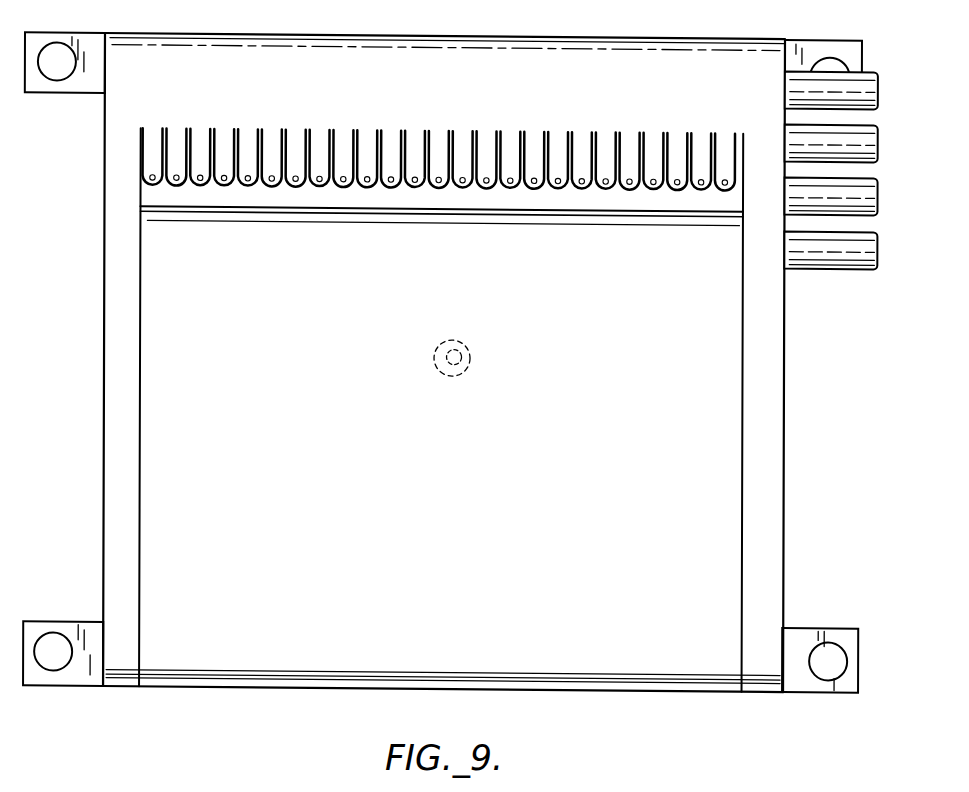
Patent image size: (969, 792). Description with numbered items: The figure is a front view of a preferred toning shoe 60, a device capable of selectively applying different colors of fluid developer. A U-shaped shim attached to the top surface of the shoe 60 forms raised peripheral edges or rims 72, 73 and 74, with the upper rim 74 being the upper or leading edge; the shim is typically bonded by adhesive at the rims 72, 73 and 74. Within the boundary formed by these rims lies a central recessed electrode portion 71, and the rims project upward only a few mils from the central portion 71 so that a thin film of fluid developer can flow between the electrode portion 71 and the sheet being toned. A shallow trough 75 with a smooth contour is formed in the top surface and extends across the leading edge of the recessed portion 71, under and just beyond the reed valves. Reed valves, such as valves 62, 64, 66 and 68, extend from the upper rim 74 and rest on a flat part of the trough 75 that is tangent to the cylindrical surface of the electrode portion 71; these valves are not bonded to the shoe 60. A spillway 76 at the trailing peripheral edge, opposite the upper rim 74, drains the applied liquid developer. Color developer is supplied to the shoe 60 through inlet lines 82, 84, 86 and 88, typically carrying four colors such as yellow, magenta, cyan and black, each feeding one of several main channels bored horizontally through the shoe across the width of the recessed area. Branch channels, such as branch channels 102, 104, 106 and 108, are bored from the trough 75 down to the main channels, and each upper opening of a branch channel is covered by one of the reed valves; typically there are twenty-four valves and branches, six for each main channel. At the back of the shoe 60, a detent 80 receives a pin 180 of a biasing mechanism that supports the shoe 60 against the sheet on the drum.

The toning shoe 60 is at (240, 702).
The reed valve 62 is at (309, 169).
The reed valve 64 is at (342, 172).
The reed valve 66 is at (422, 172).
The reed valve 68 is at (453, 169).
The central recessed electrode portion 71 is at (432, 536).
The rim 72 is at (118, 423).
The rim 73 is at (778, 444).
The upper rim 74 is at (436, 43).
The trough 75 is at (580, 199).
The spillway 76 is at (592, 686).
The detent 80 is at (453, 374).
The inlet line 82 is at (875, 88).
The inlet line 84 is at (875, 136).
The inlet line 86 is at (875, 195).
The inlet line 88 is at (875, 243).
The branch channel 102 is at (344, 188).
The branch channel 104 is at (368, 188).
The branch channel 106 is at (392, 188).
The branch channel 108 is at (416, 188).
The pin 180 is at (462, 342).